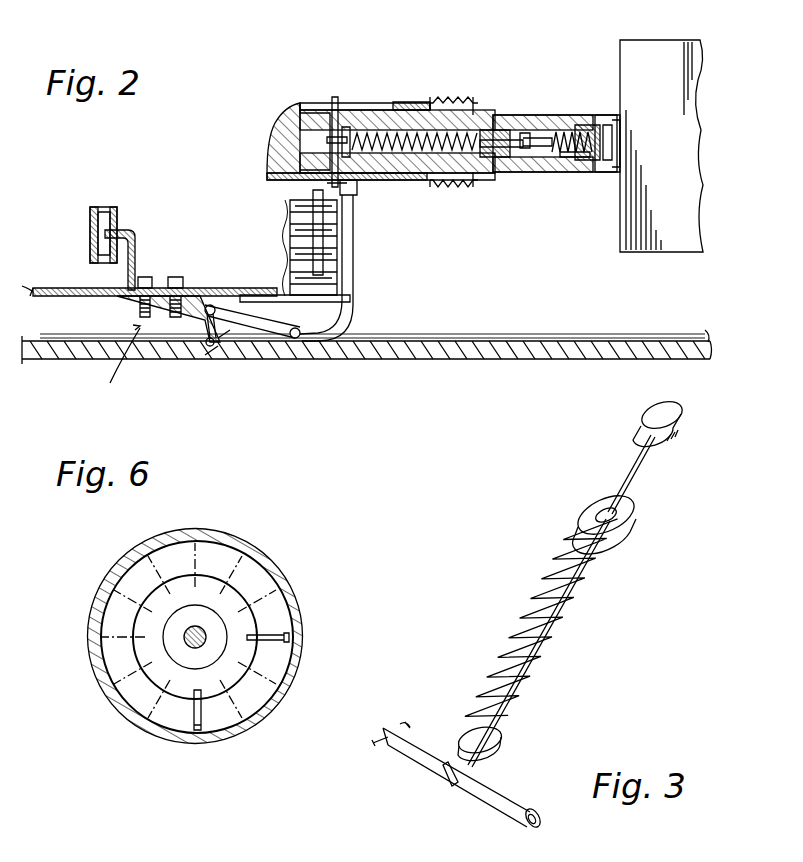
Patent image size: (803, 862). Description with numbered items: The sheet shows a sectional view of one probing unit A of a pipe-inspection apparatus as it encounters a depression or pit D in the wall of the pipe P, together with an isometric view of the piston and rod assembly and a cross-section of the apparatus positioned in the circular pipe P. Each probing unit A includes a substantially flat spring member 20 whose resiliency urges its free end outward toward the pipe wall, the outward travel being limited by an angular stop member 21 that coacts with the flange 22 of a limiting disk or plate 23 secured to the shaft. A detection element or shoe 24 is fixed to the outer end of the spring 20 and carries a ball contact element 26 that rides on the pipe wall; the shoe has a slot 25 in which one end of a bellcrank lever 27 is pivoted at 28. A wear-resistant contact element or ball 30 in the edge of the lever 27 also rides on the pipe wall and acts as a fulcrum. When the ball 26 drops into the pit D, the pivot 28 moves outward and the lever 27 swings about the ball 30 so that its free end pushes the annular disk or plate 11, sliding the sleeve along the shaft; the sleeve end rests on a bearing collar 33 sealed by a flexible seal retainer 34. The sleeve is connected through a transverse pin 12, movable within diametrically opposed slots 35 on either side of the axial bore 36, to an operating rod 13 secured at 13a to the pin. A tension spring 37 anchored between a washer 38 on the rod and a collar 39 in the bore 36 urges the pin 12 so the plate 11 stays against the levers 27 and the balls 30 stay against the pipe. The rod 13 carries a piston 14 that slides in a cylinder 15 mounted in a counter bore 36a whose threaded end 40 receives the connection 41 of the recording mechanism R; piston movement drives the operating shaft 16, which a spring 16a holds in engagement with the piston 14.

In FIG. 2, the annular disk or plate 11 is at (295, 230).
In FIG. 6, the annular disk or plate 11 is at (258, 605).
In FIG. 2, the transverse pin 12 is at (337, 97).
In FIG. 3, the transverse pin 12 is at (498, 808).
In FIG. 2, the operating rod 13 is at (505, 132).
In FIG. 3, the operating rod 13 is at (552, 653).
In FIG. 3, the rod connection to pin 13a is at (447, 786).
In FIG. 2, the piston 14 is at (528, 133).
In FIG. 3, the piston 14 is at (660, 428).
In FIG. 2, the cylinder 15 is at (515, 158).
In FIG. 2, the operating shaft 16 is at (561, 130).
In FIG. 2, the spring 16a is at (570, 160).
In FIG. 2, the spring member 20 is at (26, 286).
In FIG. 2, the angular stop member 21 is at (135, 239).
In FIG. 2, the flange 22 is at (100, 278).
In FIG. 2, the limiting disk or plate 23 is at (90, 232).
In FIG. 2, the detection element or shoe 24 is at (167, 343).
In FIG. 2, the slot 25 is at (220, 305).
In FIG. 2, the ball contact element 26 is at (206, 352).
In FIG. 2, the bellcrank lever 27 is at (355, 262).
In FIG. 6, the bellcrank lever 27 is at (287, 648).
In FIG. 2, the pivot 28 is at (208, 305).
In FIG. 2, the contact element or ball 30 is at (295, 340).
In FIG. 6, the contact element or ball 30 is at (292, 637).
In FIG. 2, the bearing collar 33 is at (412, 102).
In FIG. 2, the flexible seal retainer 34 is at (445, 95).
In FIG. 2, the slots 35 is at (288, 110).
In FIG. 2, the axial bore 36 is at (365, 110).
In FIG. 2, the counter bore 36a is at (500, 172).
In FIG. 2, the spring 37 is at (377, 150).
In FIG. 3, the spring 37 is at (575, 595).
In FIG. 2, the washer 38 is at (342, 141).
In FIG. 3, the washer 38 is at (457, 731).
In FIG. 3, the collar 39 is at (625, 517).
In FIG. 2, the threads 40 is at (574, 160).
In FIG. 2, the connection 41 is at (600, 115).
In FIG. 2, the probing unit A is at (123, 362).
In FIG. 2, the depression or pit D is at (222, 347).
In FIG. 2, the pipe P is at (415, 359).
In FIG. 6, the pipe P is at (137, 722).
In FIG. 2, the recording mechanism R is at (645, 250).